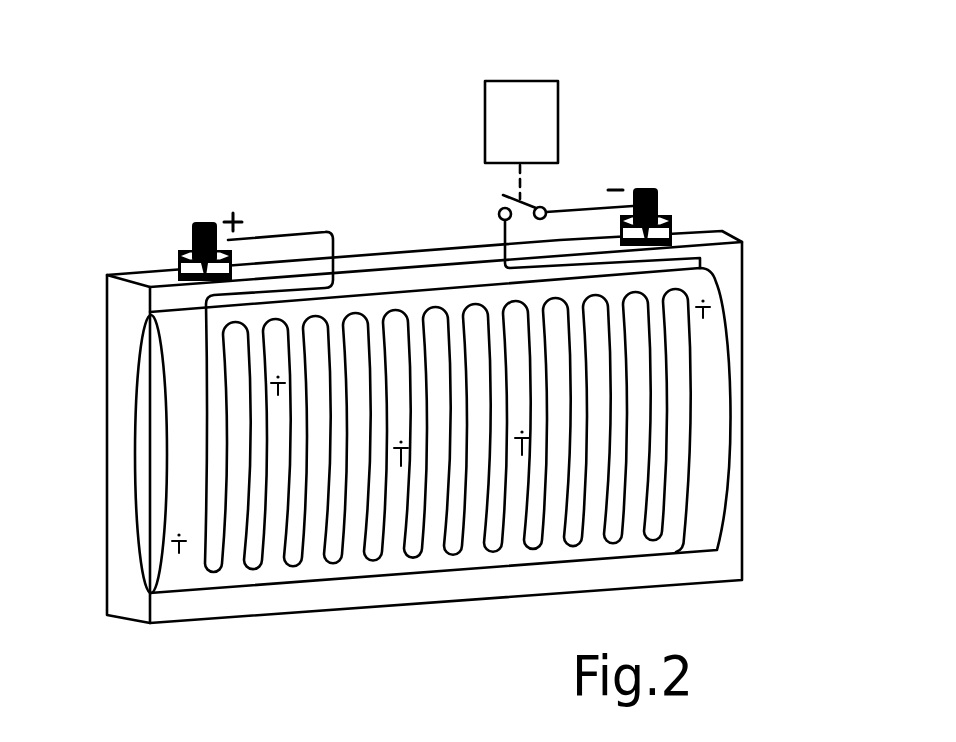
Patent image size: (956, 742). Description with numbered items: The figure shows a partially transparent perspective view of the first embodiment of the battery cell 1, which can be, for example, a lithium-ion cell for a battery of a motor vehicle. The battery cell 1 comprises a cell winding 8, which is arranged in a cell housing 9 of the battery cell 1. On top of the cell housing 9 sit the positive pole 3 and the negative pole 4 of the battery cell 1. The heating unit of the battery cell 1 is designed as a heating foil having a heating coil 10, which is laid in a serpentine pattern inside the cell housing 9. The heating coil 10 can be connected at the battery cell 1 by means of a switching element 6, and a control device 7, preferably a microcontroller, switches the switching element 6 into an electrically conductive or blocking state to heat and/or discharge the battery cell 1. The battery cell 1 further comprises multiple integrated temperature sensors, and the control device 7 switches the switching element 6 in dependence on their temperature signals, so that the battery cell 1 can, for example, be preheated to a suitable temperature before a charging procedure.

The battery cell 1 is at (776, 258).
The positive pole 3 is at (170, 218).
The negative pole 4 is at (684, 185).
The switching element 6 is at (557, 189).
The control device 7 is at (533, 137).
The cell winding 8 is at (146, 417).
The cell housing 9 is at (126, 301).
The heating coil 10 is at (693, 408).